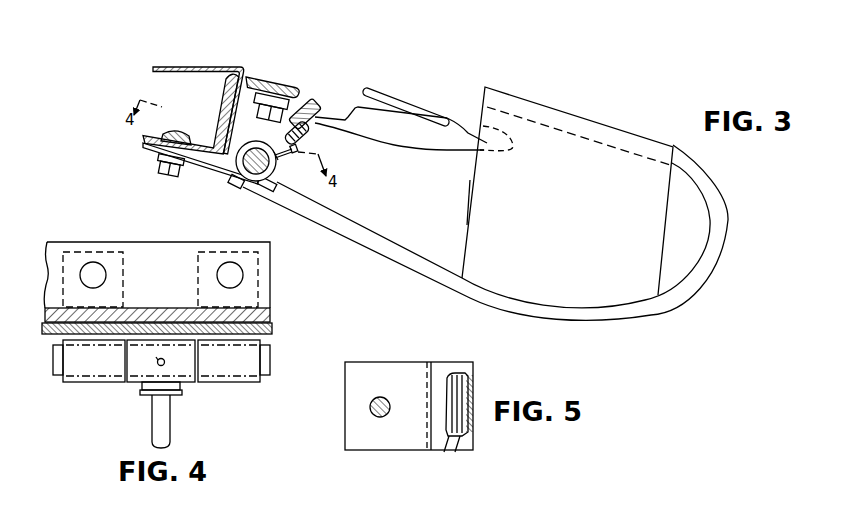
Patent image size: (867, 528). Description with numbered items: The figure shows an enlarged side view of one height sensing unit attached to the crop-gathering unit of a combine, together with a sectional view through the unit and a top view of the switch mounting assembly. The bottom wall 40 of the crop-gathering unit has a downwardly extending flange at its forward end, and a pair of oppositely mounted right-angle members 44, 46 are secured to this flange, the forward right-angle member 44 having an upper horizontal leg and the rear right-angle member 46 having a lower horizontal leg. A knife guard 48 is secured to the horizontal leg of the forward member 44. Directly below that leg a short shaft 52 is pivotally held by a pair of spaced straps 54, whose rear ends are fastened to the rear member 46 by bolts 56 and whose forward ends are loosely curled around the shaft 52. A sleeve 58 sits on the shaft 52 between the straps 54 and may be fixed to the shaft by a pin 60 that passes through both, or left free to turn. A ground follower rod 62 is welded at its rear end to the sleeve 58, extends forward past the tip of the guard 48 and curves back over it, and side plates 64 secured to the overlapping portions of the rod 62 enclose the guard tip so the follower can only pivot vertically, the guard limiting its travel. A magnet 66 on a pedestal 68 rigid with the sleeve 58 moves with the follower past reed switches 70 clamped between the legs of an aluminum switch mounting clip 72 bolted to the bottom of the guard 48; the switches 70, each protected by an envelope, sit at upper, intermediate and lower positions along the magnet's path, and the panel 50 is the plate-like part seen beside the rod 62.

In FIG. 3, the bottom wall 40 is at (205, 66).
In FIG. 4, the bottom wall 40 is at (270, 316).
In FIG. 3, the forward right-angle member 44 is at (265, 79).
In FIG. 4, the forward right-angle member 44 is at (272, 330).
In FIG. 3, the rear right-angle member 46 is at (225, 108).
In FIG. 4, the rear right-angle member 46 is at (163, 242).
In FIG. 3, the knife guard 48 is at (435, 143).
In FIG. 3, the panel 50 is at (638, 124).
In FIG. 3, the short shaft 52 is at (237, 184).
In FIG. 4, the short shaft 52 is at (215, 361).
In FIG. 3, the straps 54 is at (212, 169).
In FIG. 3, the bolts 56 is at (178, 132).
In FIG. 3, the sleeve 58 is at (257, 183).
In FIG. 4, the sleeve 58 is at (188, 378).
In FIG. 4, the pin 60 is at (150, 361).
In FIG. 3, the rod 62 is at (693, 285).
In FIG. 4, the rod 62 is at (170, 434).
In FIG. 3, the side plates 64 is at (470, 203).
In FIG. 3, the magnet 66 is at (299, 149).
In FIG. 4, the magnet 66 is at (178, 395).
In FIG. 3, the pedestal 68 is at (278, 156).
In FIG. 4, the pedestal 68 is at (146, 389).
In FIG. 3, the reed switches 70 is at (306, 107).
In FIG. 5, the reed switches 70 is at (455, 422).
In FIG. 3, the switch mounting clip 72 is at (290, 95).
In FIG. 5, the switch mounting clip 72 is at (400, 364).